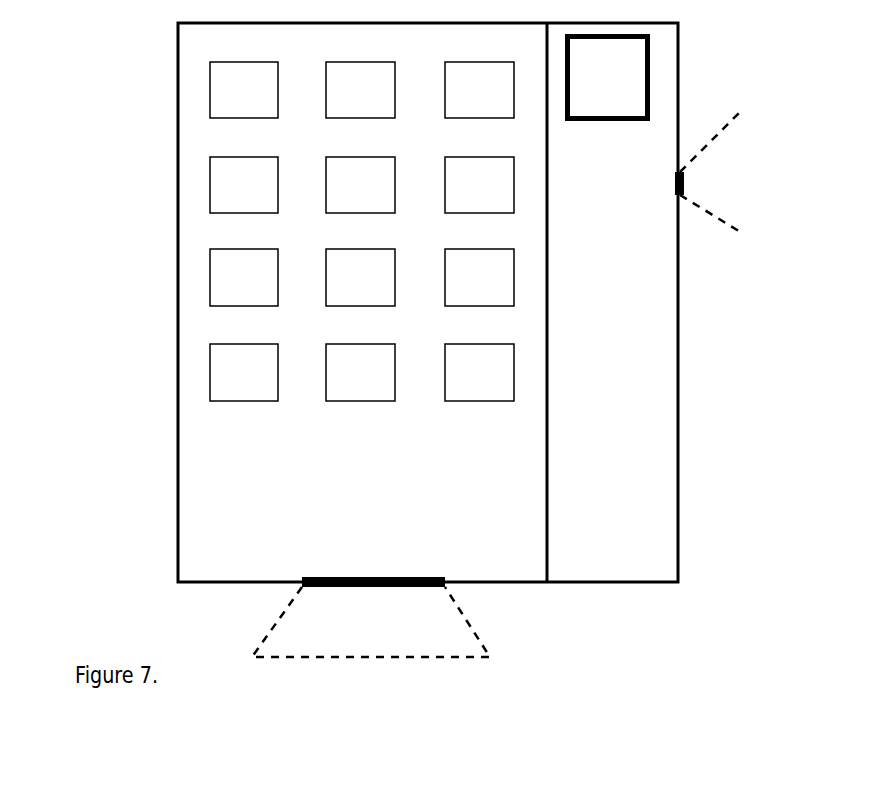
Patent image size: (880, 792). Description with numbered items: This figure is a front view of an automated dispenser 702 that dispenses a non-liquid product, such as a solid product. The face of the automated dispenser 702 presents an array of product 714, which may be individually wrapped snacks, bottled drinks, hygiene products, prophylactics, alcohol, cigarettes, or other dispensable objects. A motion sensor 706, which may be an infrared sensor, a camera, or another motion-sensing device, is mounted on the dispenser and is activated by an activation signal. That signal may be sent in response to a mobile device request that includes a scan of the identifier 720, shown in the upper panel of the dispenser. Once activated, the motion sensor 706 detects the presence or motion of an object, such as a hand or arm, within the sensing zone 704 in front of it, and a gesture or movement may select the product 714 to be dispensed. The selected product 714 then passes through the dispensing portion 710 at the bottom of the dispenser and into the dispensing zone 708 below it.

The automated dispenser 702 is at (678, 495).
The sensing zone 704 is at (712, 217).
The motion sensor 706 is at (684, 185).
The dispensing zone 708 is at (468, 620).
The dispensing portion 710 is at (372, 577).
The product 714 is at (209, 363).
The identifier 720 is at (608, 78).